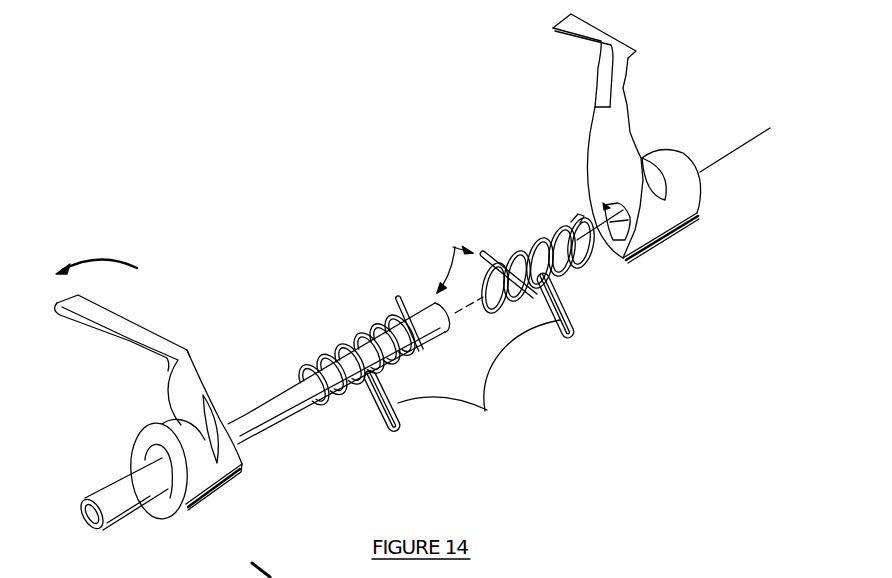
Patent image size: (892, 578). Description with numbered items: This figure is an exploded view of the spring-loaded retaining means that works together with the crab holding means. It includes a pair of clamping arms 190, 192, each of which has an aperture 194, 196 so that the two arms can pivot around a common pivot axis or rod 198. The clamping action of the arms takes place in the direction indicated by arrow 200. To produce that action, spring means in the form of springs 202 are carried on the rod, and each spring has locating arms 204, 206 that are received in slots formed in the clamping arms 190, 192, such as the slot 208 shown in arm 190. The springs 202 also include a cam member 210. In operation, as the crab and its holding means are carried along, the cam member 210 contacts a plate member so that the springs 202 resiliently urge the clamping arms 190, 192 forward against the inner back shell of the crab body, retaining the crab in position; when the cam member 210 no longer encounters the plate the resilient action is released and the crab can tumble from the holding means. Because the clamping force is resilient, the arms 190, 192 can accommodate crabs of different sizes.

The clamping arm 190 is at (128, 331).
The clamping arm 192 is at (618, 78).
The aperture 194 is at (135, 462).
The aperture 196 is at (620, 240).
The pivot axis or rod 198 is at (277, 415).
The arrow 200 is at (97, 255).
The springs 202 is at (445, 264).
The locating arm 204 is at (340, 362).
The locating arm 206 is at (580, 216).
The slot 208 is at (607, 206).
The cam member 210 is at (479, 371).